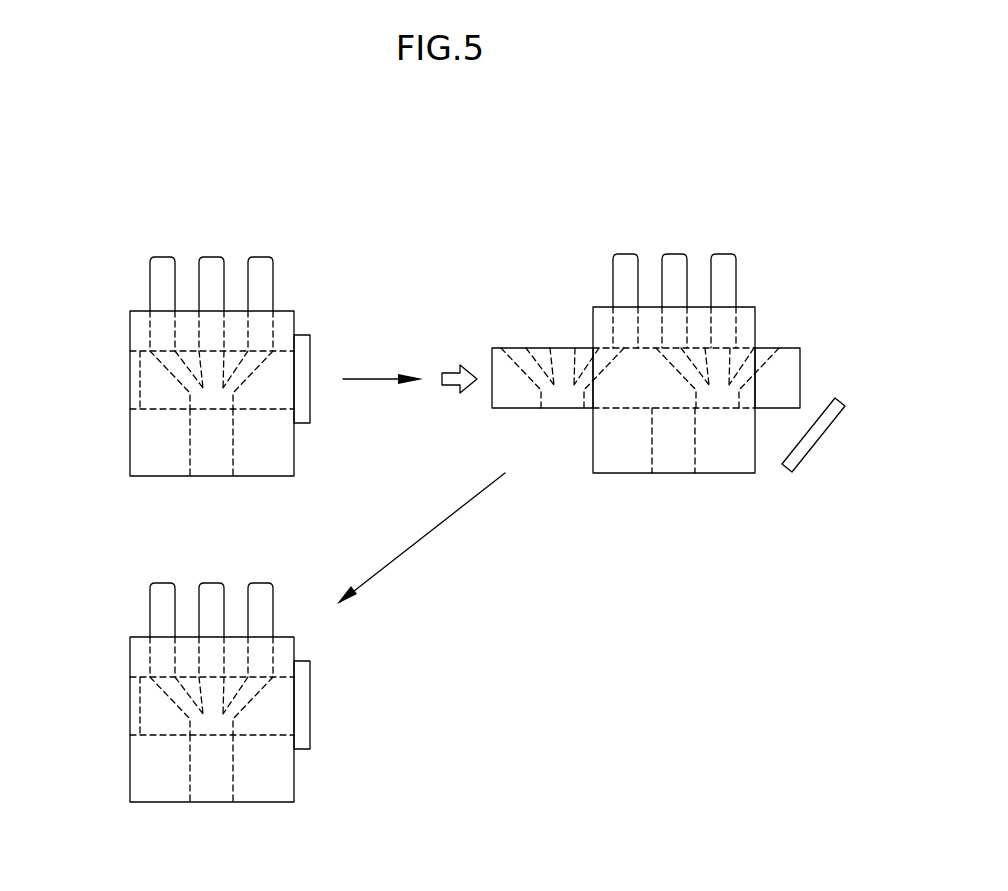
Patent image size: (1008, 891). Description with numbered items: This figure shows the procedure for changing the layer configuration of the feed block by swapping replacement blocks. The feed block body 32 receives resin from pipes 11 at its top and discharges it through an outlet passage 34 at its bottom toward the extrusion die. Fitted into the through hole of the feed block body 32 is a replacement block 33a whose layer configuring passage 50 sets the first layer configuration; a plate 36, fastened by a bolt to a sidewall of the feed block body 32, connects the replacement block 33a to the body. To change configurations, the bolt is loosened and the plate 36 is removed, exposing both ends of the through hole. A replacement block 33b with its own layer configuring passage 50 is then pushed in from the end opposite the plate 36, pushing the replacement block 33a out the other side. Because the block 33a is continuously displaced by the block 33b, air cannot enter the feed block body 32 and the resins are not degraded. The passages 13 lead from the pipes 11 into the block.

The pipes 11 is at (254, 256).
The fiber insertion passages 13 is at (162, 323).
The feed block body 32 is at (277, 457).
The replacement block 33a is at (152, 396).
The replacement block for replacement 33b is at (542, 352).
The outlet passage 34 is at (213, 468).
The plate 36 is at (300, 355).
The layer configuring passage 50 is at (265, 392).